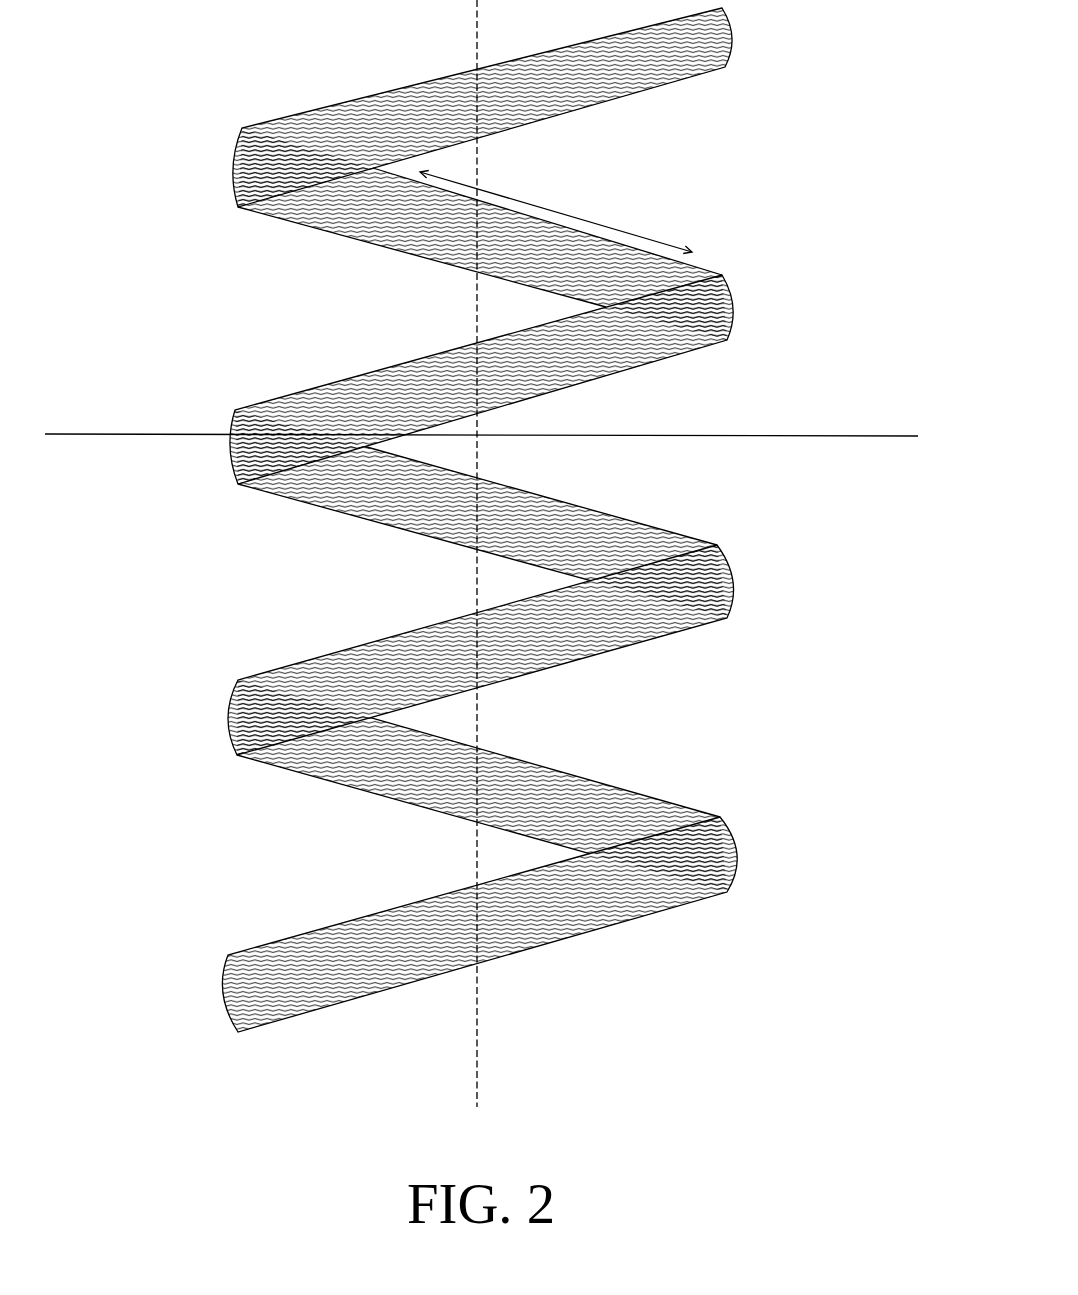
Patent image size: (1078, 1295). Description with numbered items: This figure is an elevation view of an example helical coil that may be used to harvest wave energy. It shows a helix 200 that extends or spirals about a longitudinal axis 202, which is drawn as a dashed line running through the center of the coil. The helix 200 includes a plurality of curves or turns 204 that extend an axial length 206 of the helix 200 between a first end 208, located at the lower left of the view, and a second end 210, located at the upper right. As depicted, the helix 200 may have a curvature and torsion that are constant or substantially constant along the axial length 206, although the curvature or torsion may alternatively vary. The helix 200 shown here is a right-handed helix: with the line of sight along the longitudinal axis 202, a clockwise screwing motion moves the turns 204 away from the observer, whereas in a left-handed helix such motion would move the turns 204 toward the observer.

The helix 200 is at (480, 587).
The longitudinal axis 202 is at (478, 1113).
The turns 204 is at (480, 520).
The axial length 206 is at (577, 208).
The first end 208 is at (205, 991).
The second end 210 is at (748, 38).